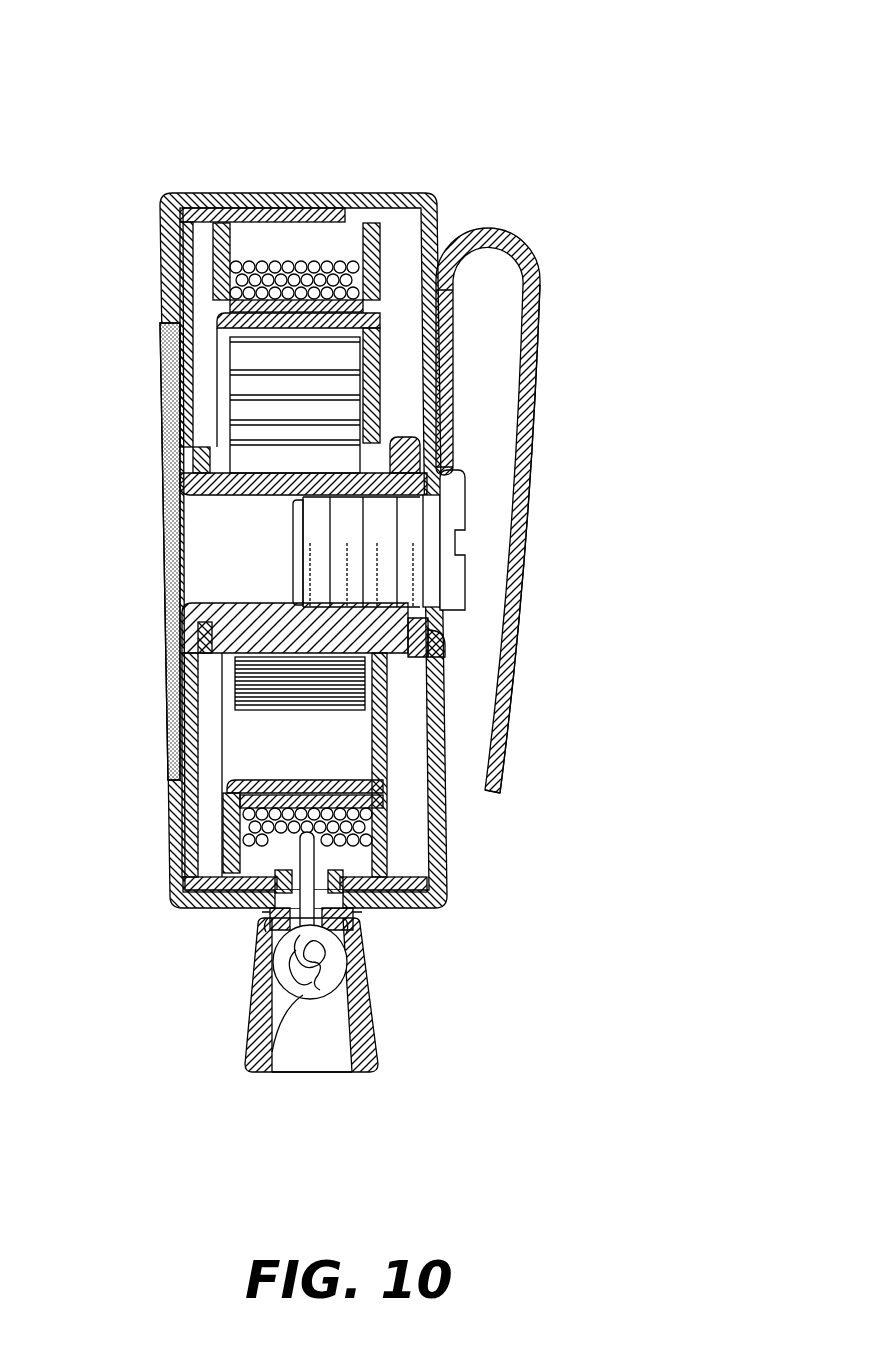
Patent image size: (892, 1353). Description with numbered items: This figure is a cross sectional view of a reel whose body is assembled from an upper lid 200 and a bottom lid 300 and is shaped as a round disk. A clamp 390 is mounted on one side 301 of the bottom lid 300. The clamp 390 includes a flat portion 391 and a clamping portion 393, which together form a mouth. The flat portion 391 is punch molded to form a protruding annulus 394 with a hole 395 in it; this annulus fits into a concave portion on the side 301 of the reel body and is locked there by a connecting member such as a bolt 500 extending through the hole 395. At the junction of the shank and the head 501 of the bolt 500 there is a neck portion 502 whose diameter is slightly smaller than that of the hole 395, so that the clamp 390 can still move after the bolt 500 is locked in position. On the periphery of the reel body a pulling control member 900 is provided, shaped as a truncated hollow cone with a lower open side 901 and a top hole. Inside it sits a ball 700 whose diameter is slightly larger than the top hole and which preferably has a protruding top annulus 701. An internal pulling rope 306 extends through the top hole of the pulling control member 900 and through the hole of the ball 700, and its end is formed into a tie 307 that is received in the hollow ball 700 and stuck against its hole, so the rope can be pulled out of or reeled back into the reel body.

The upper lid 200 is at (198, 193).
The bottom lid 300 is at (370, 192).
The side of the bottom lid 301 is at (437, 232).
The pulling rope 306 is at (303, 860).
The tie 307 is at (245, 1046).
The clamp 390 is at (513, 232).
The flat portion 391 is at (452, 328).
The clamping portion 393 is at (510, 417).
The protruding annulus 394 is at (443, 490).
The hole 395 is at (470, 663).
The bolt 500 is at (320, 548).
The head 501 is at (453, 517).
The neck portion 502 is at (432, 563).
The ball 700 is at (262, 965).
The protruding top annulus 701 is at (363, 910).
The pulling control member 900 is at (375, 1023).
The lower open side 901 is at (310, 1053).